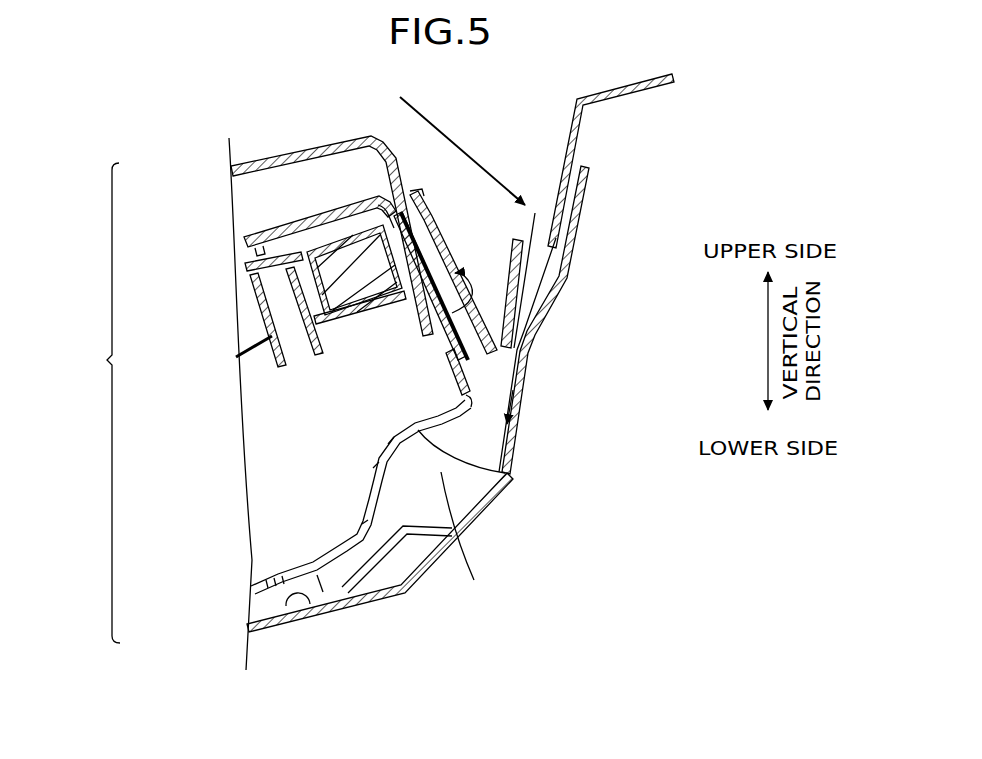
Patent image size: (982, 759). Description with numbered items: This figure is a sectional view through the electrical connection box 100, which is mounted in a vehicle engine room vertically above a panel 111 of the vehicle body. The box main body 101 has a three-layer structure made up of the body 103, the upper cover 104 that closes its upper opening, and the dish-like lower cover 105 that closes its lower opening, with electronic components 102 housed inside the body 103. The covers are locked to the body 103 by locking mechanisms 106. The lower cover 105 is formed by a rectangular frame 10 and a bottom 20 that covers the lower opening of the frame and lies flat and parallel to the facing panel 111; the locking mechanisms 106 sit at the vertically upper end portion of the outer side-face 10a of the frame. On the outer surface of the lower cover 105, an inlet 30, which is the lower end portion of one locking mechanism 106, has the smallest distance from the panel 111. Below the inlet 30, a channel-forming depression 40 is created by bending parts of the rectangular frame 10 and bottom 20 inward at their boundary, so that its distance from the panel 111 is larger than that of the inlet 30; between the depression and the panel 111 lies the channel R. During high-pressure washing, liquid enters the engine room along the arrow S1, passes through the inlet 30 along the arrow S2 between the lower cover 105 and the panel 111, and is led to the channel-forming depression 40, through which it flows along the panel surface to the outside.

The electrical connection box 100 is at (316, 128).
The box main body 101 is at (93, 403).
The electronic components 102 is at (353, 192).
The body 103 is at (485, 300).
The upper cover 104 is at (288, 150).
The lower cover 105 is at (273, 595).
The locking mechanisms 106 is at (440, 322).
The panel 111 is at (290, 623).
The rectangular frame 10 is at (472, 363).
The outer side-face 10a is at (502, 387).
The bottom 20 is at (347, 606).
The inlet 30 is at (520, 406).
The channel-forming depression 40 is at (513, 480).
The channel R is at (461, 542).
The arrow S1 is at (458, 141).
The arrow S2 is at (537, 320).